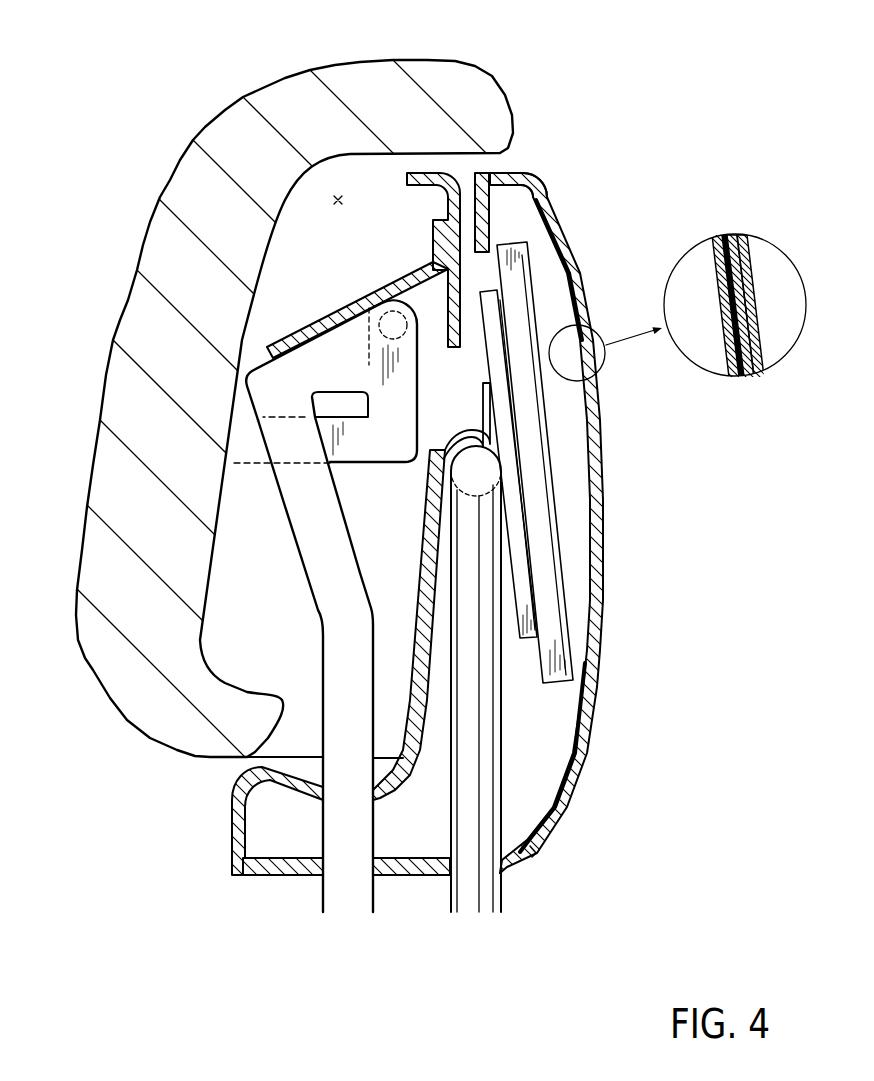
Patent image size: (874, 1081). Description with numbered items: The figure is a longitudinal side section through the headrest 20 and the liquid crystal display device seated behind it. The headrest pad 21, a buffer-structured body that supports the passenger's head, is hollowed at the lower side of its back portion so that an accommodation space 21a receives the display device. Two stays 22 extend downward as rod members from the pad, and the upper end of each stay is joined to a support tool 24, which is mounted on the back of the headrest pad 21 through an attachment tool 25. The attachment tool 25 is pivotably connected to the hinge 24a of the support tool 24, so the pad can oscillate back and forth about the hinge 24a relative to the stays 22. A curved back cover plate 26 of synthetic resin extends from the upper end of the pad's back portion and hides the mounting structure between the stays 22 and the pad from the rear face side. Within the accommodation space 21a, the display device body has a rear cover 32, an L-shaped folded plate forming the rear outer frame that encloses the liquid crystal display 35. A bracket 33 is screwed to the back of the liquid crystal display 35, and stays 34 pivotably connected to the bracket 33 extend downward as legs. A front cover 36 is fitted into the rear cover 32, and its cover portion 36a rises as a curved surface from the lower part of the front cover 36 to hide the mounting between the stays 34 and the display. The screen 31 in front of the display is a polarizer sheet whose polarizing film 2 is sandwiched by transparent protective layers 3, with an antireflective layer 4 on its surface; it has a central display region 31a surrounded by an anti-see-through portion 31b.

The headrest 20 is at (122, 93).
The headrest pad 21 is at (137, 317).
The accommodation space 21a is at (338, 197).
The stay 22 is at (340, 840).
The support tool 24 is at (298, 360).
The hinge 24a is at (393, 325).
The attachment tool 25 is at (247, 450).
The back cover plate 26 is at (450, 233).
The screen 31 is at (589, 523).
The display region 31a is at (593, 603).
The anti-see-through portion 31b is at (555, 240).
The rear cover 32 is at (530, 183).
The bracket 33 is at (517, 512).
The stay 34 is at (472, 793).
The liquid crystal display 35 is at (537, 427).
The front cover 36 is at (482, 218).
The cover portion 36a is at (415, 705).
The polarizing film 2 is at (724, 240).
The transparent protective layer 3 is at (717, 250).
The antireflective layer 4 is at (746, 262).